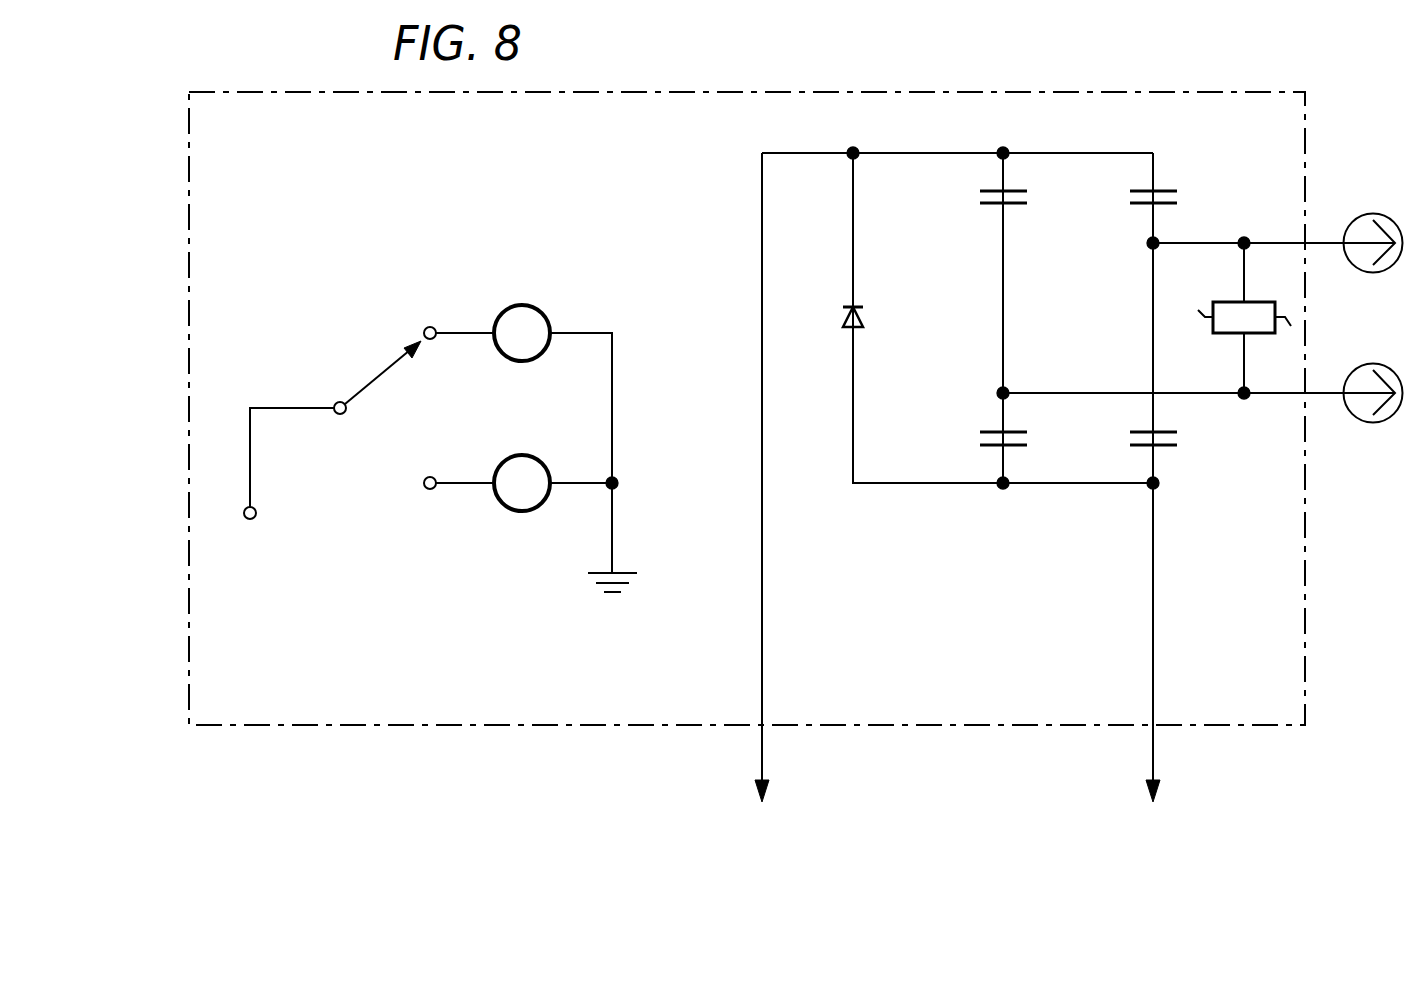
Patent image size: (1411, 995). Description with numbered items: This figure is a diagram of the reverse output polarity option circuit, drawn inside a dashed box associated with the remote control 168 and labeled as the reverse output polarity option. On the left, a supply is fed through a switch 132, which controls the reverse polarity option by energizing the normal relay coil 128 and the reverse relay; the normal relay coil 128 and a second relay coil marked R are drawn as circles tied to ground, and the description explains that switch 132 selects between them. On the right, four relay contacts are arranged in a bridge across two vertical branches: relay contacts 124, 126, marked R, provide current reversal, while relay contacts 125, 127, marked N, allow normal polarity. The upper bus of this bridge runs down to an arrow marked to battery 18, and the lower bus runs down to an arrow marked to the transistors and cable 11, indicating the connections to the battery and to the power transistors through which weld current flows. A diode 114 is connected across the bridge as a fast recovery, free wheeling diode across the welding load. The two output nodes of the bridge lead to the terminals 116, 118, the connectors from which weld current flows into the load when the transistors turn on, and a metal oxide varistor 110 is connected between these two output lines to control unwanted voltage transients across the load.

The remote control 168 is at (1078, 92).
The switch 132 is at (375, 377).
The relay coil 128 is at (506, 307).
The relay contact 126 is at (506, 510).
The relay contact 124 is at (990, 207).
The relay contact 127 is at (990, 428).
The relay contact 125 is at (1163, 187).
The diode 114 is at (863, 312).
The varistor 110 is at (1213, 323).
The terminal 116 is at (1398, 262).
The terminal 118 is at (1398, 412).
The battery 18 is at (759, 510).
The cable 11 is at (1150, 677).